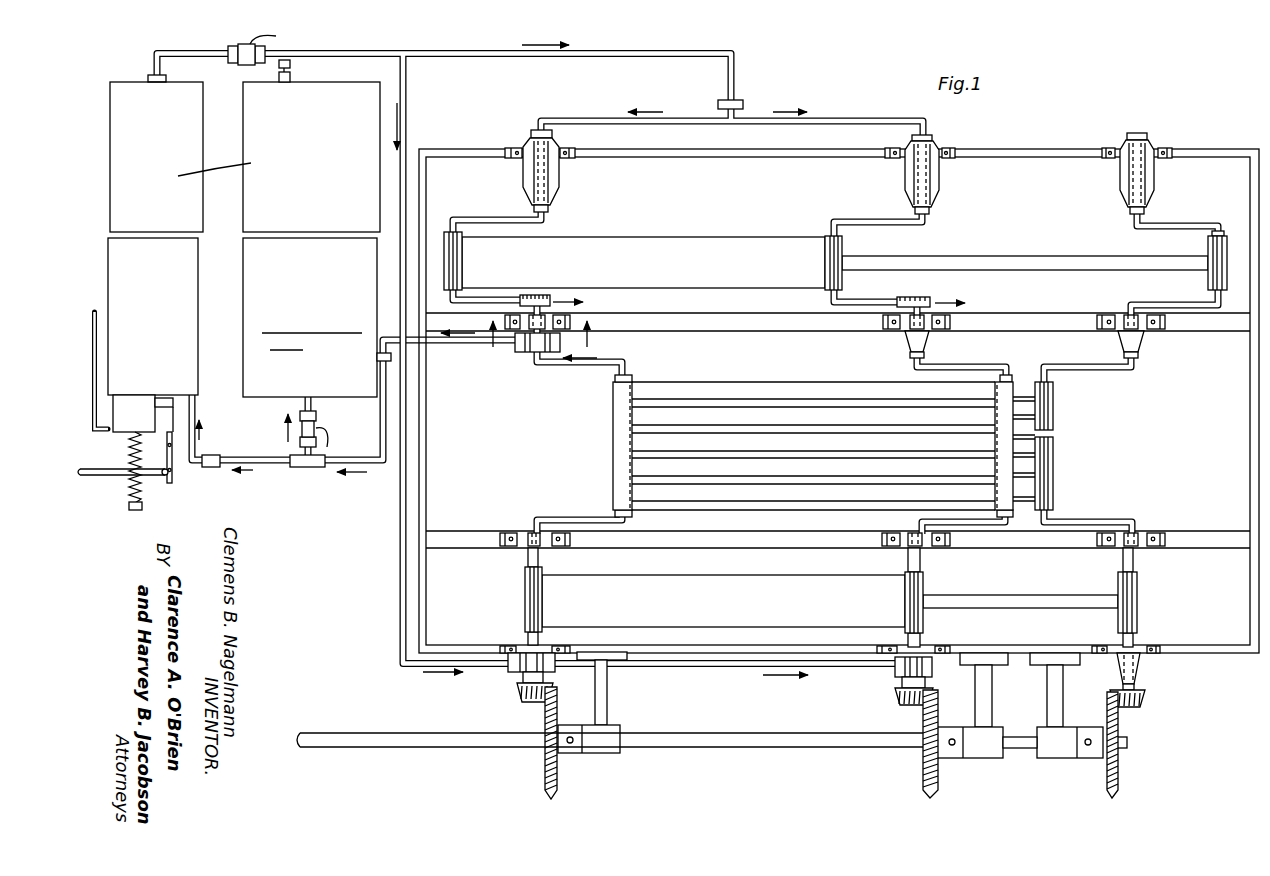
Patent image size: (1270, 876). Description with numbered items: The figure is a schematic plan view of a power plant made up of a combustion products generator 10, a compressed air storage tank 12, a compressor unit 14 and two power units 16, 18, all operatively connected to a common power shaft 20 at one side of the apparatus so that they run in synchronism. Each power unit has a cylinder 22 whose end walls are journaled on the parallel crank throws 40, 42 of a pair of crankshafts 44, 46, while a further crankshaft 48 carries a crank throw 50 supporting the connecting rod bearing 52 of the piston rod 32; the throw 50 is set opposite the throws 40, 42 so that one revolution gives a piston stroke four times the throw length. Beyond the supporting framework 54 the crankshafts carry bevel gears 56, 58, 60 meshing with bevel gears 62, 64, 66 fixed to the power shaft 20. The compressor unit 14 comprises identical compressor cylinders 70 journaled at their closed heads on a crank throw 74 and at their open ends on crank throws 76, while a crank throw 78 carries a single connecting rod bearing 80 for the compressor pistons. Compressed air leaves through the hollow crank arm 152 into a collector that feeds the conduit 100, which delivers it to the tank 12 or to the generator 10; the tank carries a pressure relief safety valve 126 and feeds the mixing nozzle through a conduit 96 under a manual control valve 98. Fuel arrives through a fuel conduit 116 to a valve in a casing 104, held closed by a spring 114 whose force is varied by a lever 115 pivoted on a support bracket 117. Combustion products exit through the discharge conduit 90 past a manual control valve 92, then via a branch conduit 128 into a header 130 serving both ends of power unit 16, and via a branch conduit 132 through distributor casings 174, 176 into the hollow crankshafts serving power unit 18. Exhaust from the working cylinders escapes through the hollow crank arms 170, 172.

The combustion products generator 10 is at (128, 149).
The compressed air storage tank 12 is at (256, 268).
The compressor unit 14 is at (608, 431).
The power unit 16 is at (637, 192).
The power unit 18 is at (358, 608).
The power shaft 20 is at (435, 748).
The cylinders 22 is at (698, 250).
The piston rods 32 is at (1005, 267).
The crank throw 40 is at (453, 228).
The crank throw 42 is at (832, 224).
The crankshaft 44 is at (484, 214).
The crankshaft 46 is at (843, 215).
The crankshaft 48 is at (1177, 220).
The crank throw 50 is at (1222, 228).
The connecting rod bearing 52 is at (1228, 262).
The supporting framework 54 is at (1247, 431).
The bevel gear 56 is at (523, 700).
The bevel gear 58 is at (898, 702).
The bevel gear 60 is at (1143, 706).
The bevel gear 62 is at (558, 777).
The bevel gear 64 is at (921, 773).
The bevel gear 66 is at (1118, 773).
The compressor cylinders 70 is at (703, 443).
The crank throw 74 is at (633, 375).
The crank throws 76 is at (1008, 372).
The crank throw 78 is at (1052, 517).
The connecting rod bearing 80 is at (1055, 465).
The discharge conduit 90 is at (184, 52).
The manual control valve 92 is at (268, 44).
The conduit 96 is at (287, 468).
The manual control valve 98 is at (323, 431).
The conduit 100 is at (375, 465).
The casing 104 is at (142, 406).
The spring 114 is at (140, 499).
The lever 115 is at (102, 477).
The fuel conduit 116 is at (98, 327).
The support bracket 117 is at (172, 476).
The pressure relief safety valve 126 is at (293, 72).
The branch conduit 128 is at (735, 92).
The header 130 is at (597, 117).
The branch conduit 132 is at (425, 435).
The hollow crank arm 152 is at (587, 368).
The hollow crank arm 170 is at (548, 292).
The hollow crank arm 172 is at (917, 288).
The distributor casing 174 is at (512, 668).
The distributor casing 176 is at (897, 676).